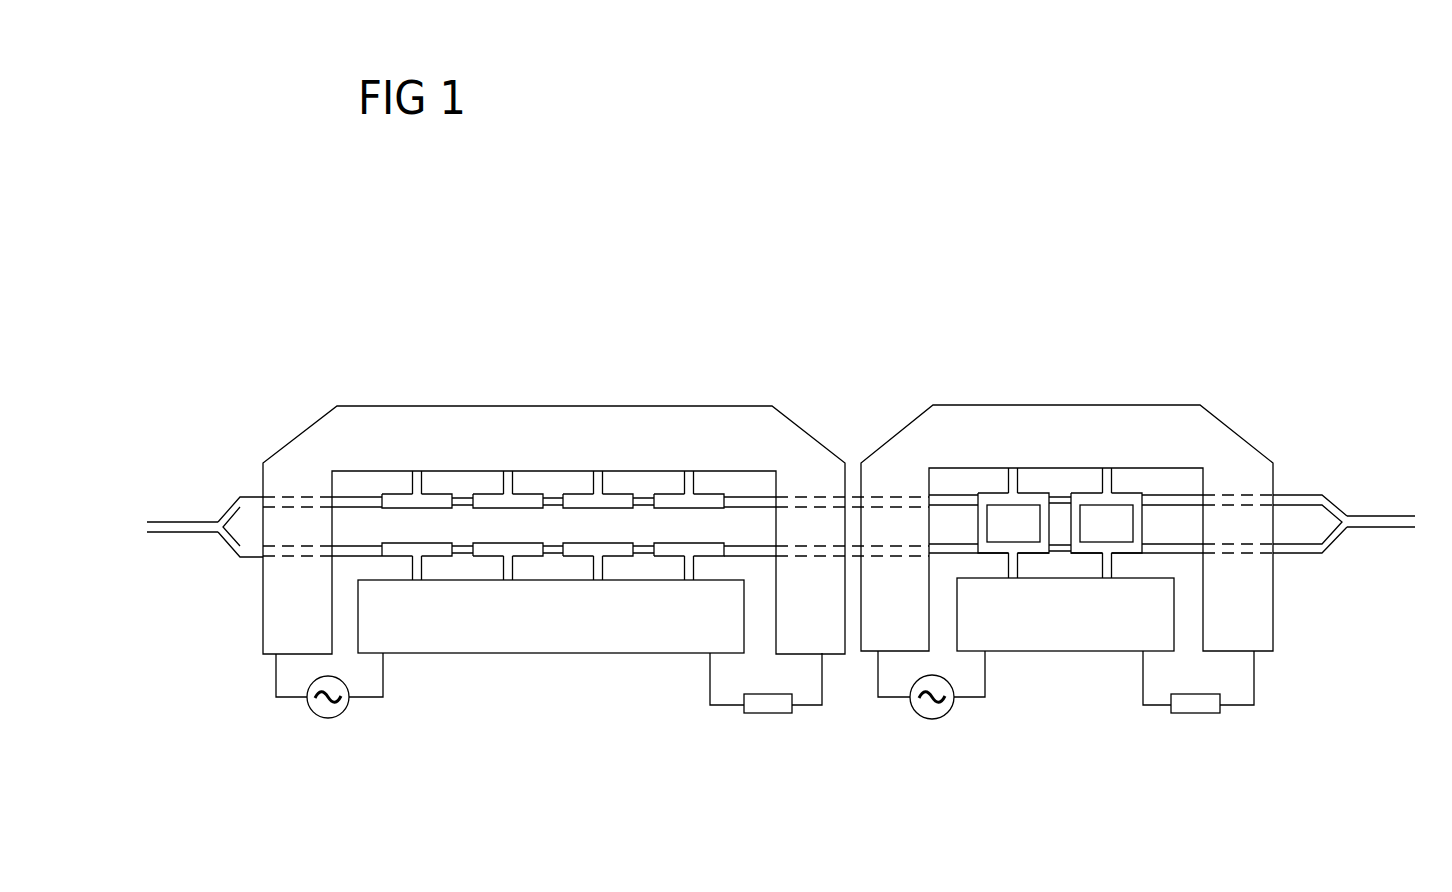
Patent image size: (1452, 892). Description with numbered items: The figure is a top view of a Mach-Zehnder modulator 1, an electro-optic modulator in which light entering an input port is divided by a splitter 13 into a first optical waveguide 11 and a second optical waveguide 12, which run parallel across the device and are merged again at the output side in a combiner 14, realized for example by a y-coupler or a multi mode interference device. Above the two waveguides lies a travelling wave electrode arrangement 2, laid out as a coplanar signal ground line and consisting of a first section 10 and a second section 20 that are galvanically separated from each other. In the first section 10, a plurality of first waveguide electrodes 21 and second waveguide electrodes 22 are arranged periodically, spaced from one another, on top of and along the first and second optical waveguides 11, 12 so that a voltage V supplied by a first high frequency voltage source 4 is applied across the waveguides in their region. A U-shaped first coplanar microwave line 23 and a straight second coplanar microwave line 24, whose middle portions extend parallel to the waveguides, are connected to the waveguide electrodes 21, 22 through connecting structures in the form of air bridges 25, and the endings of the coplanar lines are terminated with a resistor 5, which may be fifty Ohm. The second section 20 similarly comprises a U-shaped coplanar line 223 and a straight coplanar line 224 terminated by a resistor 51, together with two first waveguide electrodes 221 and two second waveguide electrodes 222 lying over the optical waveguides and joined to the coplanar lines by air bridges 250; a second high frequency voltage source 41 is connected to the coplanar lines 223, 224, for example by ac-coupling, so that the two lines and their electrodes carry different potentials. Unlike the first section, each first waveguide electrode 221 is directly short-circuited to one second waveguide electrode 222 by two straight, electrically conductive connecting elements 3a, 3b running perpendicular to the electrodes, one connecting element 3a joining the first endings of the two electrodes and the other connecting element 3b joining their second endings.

The Mach-Zehnder modulator 1 is at (272, 347).
The first section 10 is at (542, 390).
The travelling wave electrode arrangement 2 is at (787, 382).
The second section 20 is at (1063, 390).
The first optical waveguide 11 is at (362, 497).
The second optical waveguide 12 is at (362, 556).
The splitter 13 is at (225, 515).
The combiner 14 is at (1329, 503).
The first waveguide electrodes 21 is at (438, 500).
The second waveguide electrodes 22 is at (444, 552).
The first coplanar microwave line 23 is at (718, 428).
The second coplanar microwave line 24 is at (663, 637).
The air bridges 25 is at (415, 478).
The first waveguide electrodes 221 is at (992, 498).
The second waveguide electrodes 222 is at (997, 548).
The U-shaped coplanar line 223 is at (1118, 428).
The straight coplanar line 224 is at (1078, 633).
The air bridges 250 is at (1014, 475).
The connecting element 3a is at (978, 525).
The connecting element 3b is at (1049, 527).
The first high frequency voltage source 4 is at (320, 710).
The second high frequency voltage source 41 is at (932, 715).
The resistor 5 is at (764, 703).
The resistor 51 is at (1193, 702).